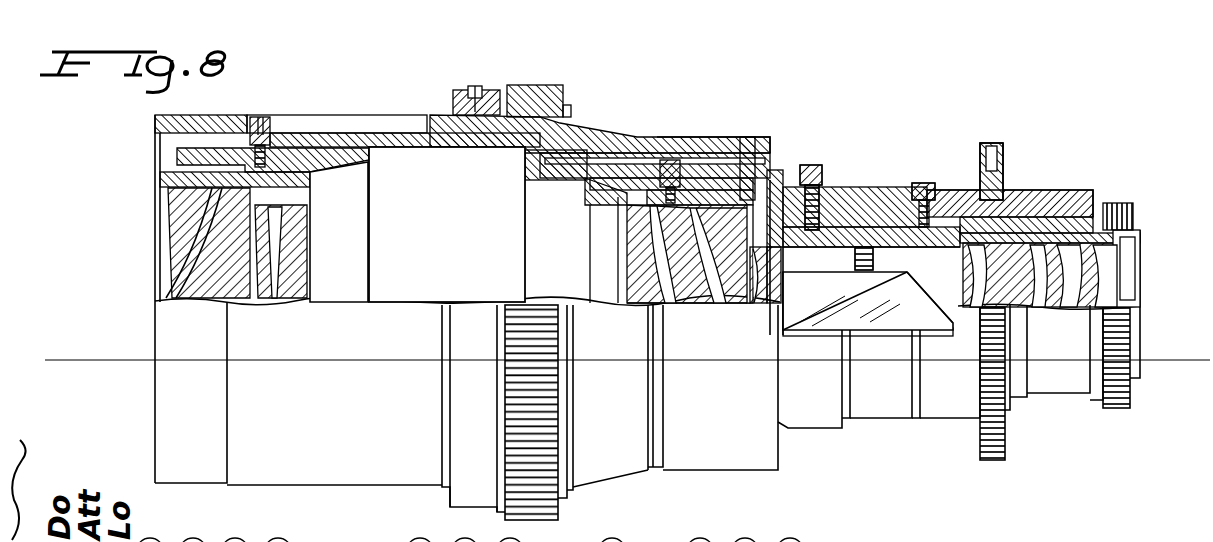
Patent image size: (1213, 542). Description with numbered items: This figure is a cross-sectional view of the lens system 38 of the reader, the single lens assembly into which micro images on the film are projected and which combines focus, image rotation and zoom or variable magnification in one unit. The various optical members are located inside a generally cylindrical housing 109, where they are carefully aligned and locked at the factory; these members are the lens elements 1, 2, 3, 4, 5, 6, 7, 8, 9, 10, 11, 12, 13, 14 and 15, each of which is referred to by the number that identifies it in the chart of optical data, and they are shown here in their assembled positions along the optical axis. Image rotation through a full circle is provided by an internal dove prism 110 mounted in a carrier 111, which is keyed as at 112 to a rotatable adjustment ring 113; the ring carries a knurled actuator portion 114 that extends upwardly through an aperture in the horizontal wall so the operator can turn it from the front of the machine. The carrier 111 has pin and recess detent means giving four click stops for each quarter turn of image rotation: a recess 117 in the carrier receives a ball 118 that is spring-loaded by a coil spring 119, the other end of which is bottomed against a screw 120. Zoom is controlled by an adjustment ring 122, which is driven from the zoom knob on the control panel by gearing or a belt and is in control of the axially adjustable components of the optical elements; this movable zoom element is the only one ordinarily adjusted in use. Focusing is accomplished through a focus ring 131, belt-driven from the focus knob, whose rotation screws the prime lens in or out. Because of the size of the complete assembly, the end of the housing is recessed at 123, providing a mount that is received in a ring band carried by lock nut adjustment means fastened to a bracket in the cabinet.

The lens element 1 is at (183, 240).
The lens element 2 is at (212, 257).
The lens element 3 is at (245, 275).
The lens element 4 is at (303, 247).
The lens element 5 is at (643, 252).
The lens element 6 is at (655, 250).
The lens element 7 is at (685, 245).
The lens element 8 is at (740, 265).
The lens element 9 is at (745, 262).
The lens element 10 is at (767, 255).
The lens element 11 is at (830, 308).
The lens element 12 is at (980, 273).
The lens element 13 is at (1038, 277).
The lens element 14 is at (1077, 287).
The lens element 15 is at (1113, 305).
The lens system 38 is at (648, 481).
The housing 109 is at (700, 137).
The prism 110 is at (908, 296).
The carrier 111 is at (850, 240).
The key 112 is at (935, 181).
The adjustment ring 113 is at (1002, 196).
The knurled actuator portion 114 is at (993, 143).
The recess 117 is at (802, 301).
The ball 118 is at (845, 243).
The coil spring 119 is at (800, 173).
The screw 120 is at (807, 182).
The adjustment ring 122 is at (547, 96).
The recess 123 is at (172, 447).
The focus ring 131 is at (1140, 172).